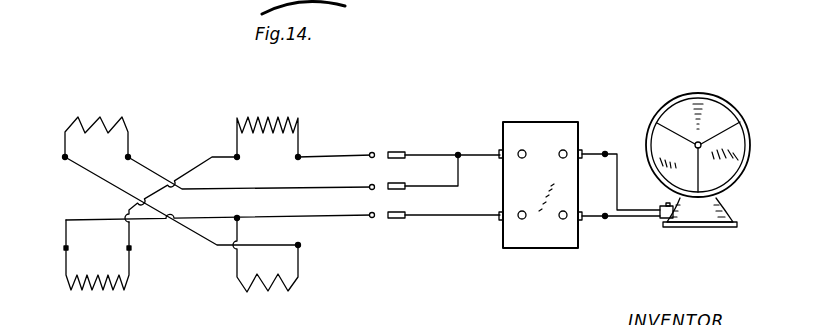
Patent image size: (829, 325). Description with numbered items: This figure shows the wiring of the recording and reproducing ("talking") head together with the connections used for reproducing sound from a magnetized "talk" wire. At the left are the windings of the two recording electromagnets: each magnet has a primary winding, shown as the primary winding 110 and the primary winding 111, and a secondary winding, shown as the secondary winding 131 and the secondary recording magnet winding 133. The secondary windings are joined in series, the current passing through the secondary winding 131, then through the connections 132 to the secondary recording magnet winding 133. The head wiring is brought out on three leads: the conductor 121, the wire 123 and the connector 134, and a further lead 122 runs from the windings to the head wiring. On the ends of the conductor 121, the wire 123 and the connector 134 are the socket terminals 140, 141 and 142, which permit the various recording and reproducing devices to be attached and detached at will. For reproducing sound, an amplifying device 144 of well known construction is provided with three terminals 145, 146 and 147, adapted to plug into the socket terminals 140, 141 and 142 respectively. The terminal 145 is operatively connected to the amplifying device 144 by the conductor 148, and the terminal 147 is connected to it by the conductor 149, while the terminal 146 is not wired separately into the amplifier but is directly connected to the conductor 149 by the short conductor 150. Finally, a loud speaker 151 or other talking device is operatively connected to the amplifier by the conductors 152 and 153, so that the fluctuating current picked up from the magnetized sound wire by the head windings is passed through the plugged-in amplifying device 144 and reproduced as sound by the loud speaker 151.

The primary winding 110 is at (104, 117).
The primary winding 111 is at (273, 286).
The conductor 121 is at (313, 217).
The conductor 122 is at (108, 185).
The wire 123 is at (232, 188).
The secondary winding 131 is at (103, 293).
The connections 132 is at (190, 163).
The secondary recording magnet winding 133 is at (268, 118).
The connector 134 is at (330, 149).
The socket terminal 140 is at (358, 206).
The socket terminal 141 is at (355, 176).
The socket terminal 142 is at (376, 146).
The amplifying device 144 is at (545, 128).
The terminal 145 is at (400, 222).
The terminal 146 is at (413, 197).
The terminal 147 is at (397, 153).
The conductor 148 is at (473, 221).
The conductor 149 is at (467, 148).
The conductor 150 is at (465, 183).
The loud speaker 151 is at (708, 95).
The conductor 152 is at (598, 149).
The conductor 153 is at (592, 220).